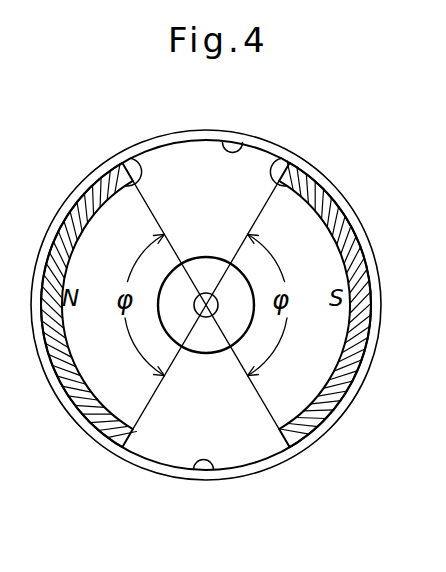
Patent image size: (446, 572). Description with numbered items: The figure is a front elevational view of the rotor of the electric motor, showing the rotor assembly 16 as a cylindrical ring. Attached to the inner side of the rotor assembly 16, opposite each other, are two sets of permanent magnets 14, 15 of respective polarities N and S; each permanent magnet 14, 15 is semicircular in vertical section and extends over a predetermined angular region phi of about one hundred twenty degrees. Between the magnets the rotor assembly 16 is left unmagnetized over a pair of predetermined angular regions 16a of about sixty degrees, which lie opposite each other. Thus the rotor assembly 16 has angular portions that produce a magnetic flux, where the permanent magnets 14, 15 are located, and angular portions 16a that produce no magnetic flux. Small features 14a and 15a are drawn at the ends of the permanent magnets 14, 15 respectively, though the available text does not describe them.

The permanent magnet 14 is at (95, 177).
The notch at end of first magnet 14a is at (131, 158).
The permanent magnet 15 is at (319, 182).
The notch at end of second magnet 15a is at (282, 158).
The rotor assembly 16 is at (209, 129).
The predetermined angular regions 16a is at (247, 150).